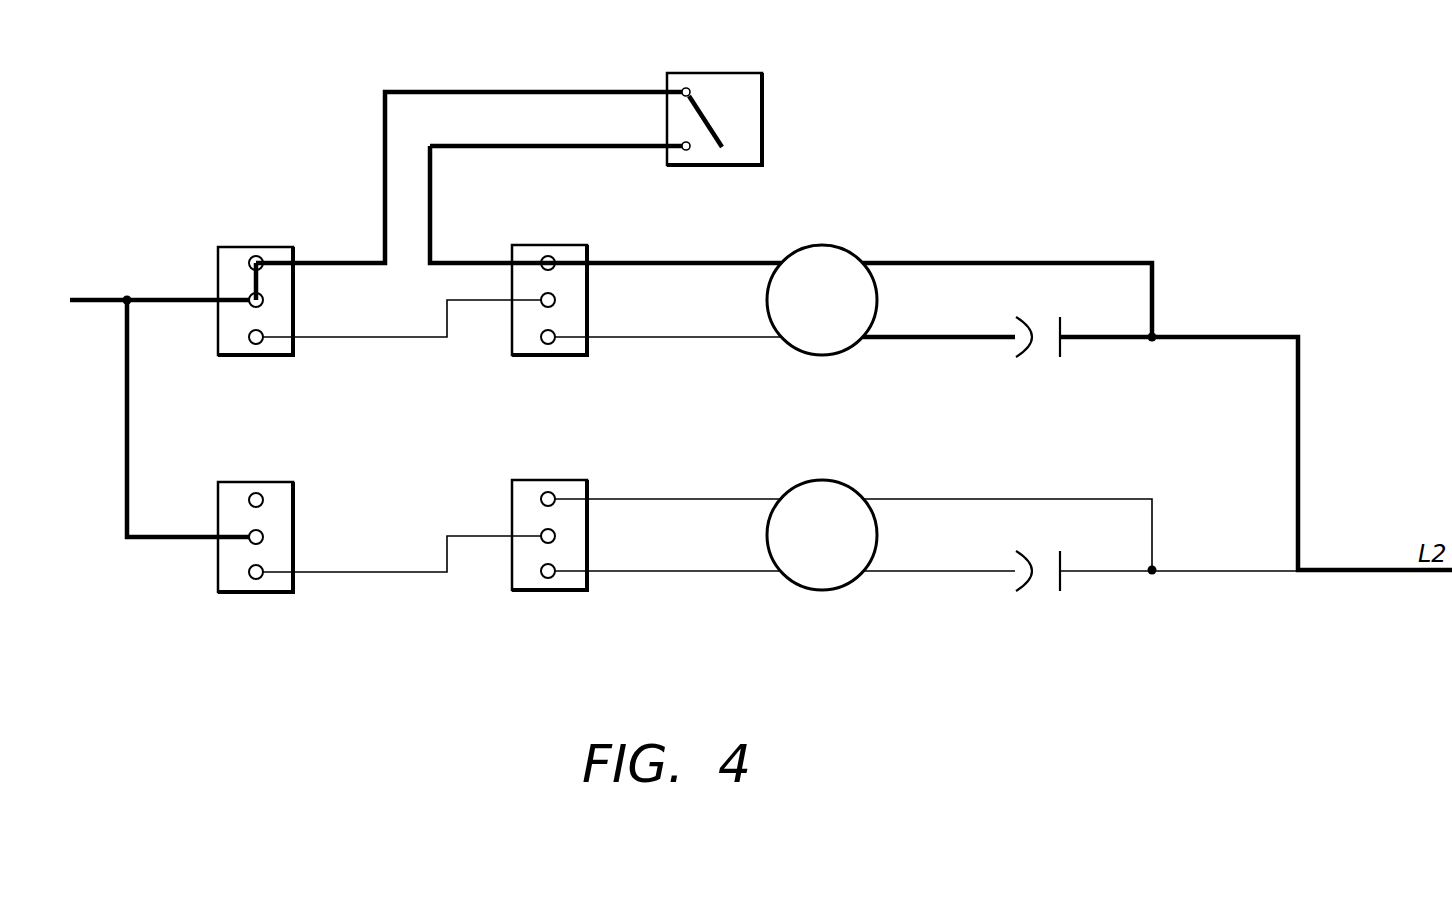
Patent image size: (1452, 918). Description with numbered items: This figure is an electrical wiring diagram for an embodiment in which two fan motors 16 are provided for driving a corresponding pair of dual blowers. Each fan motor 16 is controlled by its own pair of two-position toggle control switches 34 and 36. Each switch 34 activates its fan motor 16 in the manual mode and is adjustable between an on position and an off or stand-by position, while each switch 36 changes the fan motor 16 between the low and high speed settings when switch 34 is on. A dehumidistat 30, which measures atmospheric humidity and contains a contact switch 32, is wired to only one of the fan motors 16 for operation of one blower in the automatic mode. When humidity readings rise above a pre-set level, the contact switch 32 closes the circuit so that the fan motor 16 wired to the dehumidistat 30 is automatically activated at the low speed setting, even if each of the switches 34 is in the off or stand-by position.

The fan motor 16 is at (803, 247).
The dehumidistat 30 is at (762, 91).
The contact switch 32 is at (703, 92).
The two-position toggle control switch 34 is at (218, 273).
The two-position toggle control switch 36 is at (512, 345).